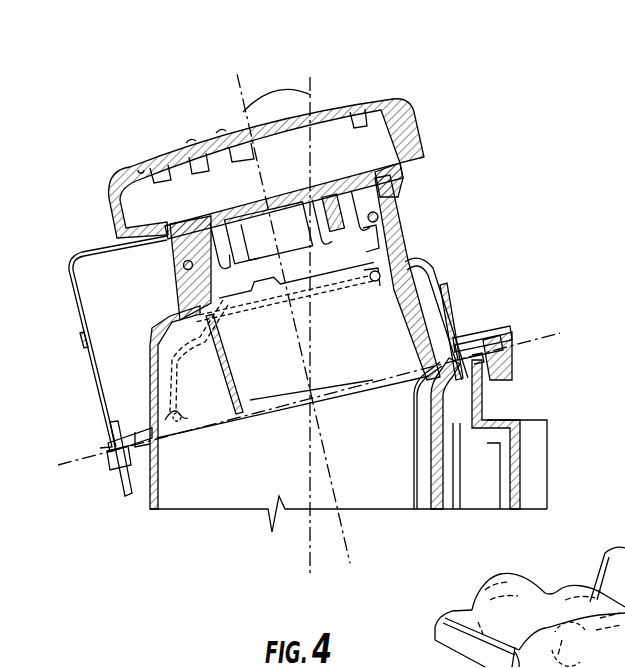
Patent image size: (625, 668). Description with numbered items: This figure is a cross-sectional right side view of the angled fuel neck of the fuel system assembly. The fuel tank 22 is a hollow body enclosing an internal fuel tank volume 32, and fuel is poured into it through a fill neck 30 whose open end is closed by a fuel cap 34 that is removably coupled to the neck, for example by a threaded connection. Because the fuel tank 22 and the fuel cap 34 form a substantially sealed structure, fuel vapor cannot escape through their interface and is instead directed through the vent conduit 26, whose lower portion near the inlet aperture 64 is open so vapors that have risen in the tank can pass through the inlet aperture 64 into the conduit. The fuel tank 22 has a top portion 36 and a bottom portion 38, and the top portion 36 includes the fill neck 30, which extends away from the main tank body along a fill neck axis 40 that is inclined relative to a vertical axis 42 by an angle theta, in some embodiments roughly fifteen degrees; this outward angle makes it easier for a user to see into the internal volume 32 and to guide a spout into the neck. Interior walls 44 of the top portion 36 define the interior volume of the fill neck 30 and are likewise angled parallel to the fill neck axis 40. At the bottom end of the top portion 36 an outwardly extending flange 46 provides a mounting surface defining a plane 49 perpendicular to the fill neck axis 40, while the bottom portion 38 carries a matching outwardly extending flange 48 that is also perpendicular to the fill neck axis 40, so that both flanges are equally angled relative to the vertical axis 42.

The fuel tank 22 is at (458, 160).
The vent conduit 26 is at (373, 280).
The fill neck 30 is at (407, 240).
The internal fuel tank volume 32 is at (242, 480).
The fuel cap 34 is at (400, 103).
The top portion 36 is at (437, 278).
The bottom portion 38 is at (547, 453).
The fill neck axis 40 is at (237, 90).
The vertical axis 42 is at (310, 77).
The interior walls 44 is at (197, 343).
The flange 46 is at (133, 433).
The flange 48 is at (150, 462).
The plane 49 is at (553, 340).
The inlet aperture 64 is at (376, 292).